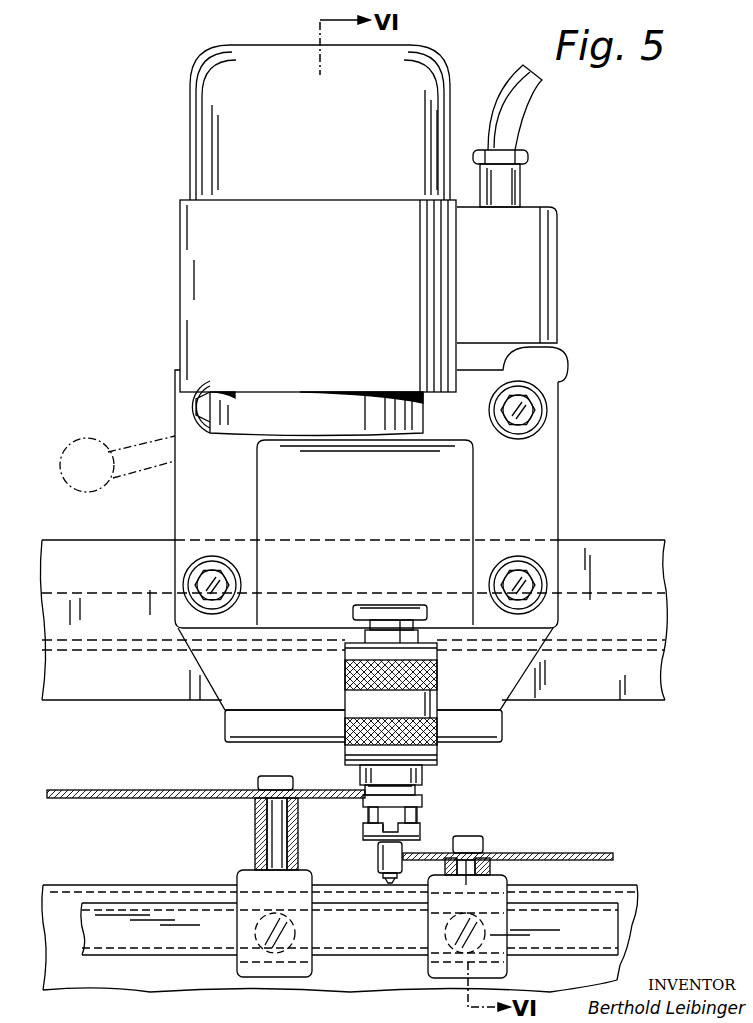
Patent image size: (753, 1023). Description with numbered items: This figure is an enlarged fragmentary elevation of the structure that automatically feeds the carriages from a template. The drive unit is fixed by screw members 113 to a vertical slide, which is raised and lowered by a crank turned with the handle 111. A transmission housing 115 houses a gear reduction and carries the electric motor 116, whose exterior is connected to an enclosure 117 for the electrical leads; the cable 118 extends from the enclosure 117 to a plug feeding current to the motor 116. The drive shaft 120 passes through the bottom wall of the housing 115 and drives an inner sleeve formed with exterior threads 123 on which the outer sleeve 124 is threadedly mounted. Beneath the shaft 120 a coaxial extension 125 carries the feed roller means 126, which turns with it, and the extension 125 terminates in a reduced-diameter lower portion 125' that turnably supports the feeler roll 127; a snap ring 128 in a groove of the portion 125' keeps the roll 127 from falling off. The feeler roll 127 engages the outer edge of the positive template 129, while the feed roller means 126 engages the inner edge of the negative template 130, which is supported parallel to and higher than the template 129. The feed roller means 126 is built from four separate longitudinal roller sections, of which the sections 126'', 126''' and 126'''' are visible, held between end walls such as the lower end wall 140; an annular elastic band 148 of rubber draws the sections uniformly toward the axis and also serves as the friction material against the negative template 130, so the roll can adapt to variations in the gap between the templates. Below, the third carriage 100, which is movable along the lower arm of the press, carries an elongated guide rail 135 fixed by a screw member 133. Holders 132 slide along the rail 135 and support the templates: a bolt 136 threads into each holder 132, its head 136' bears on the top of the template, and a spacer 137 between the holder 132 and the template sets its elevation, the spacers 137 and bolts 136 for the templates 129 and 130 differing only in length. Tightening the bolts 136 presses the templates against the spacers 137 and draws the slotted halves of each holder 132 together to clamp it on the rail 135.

The third carriage 100 is at (72, 897).
The handle 111 is at (75, 438).
The screw members 113 is at (528, 405).
The transmission housing 115 is at (455, 481).
The electric motor 116 is at (200, 288).
The enclosure 117 is at (517, 220).
The cable 118 is at (505, 118).
The drive shaft 120 is at (398, 625).
The exterior threads 123 is at (373, 612).
The outer sleeve 124 is at (440, 673).
The coaxial extension 125 is at (404, 842).
The reduced-diameter lower portion 125' is at (370, 910).
The feed roller means 126 is at (428, 816).
The roller section 126'' is at (340, 820).
The roller section 126''' is at (422, 777).
The roller section 126'''' is at (436, 820).
The feeler roll 127 is at (378, 866).
The snap ring 128 is at (402, 868).
The positive template 129 is at (608, 855).
The negative template 130 is at (98, 792).
The holders 132 is at (242, 966).
The screw member 133 is at (450, 942).
The guide rail 135 is at (112, 935).
The bolt 136 is at (370, 844).
The bolt head 136' is at (366, 805).
The spacer 137 is at (256, 857).
The lower end wall 140 is at (380, 834).
The elastic band 148 is at (367, 798).